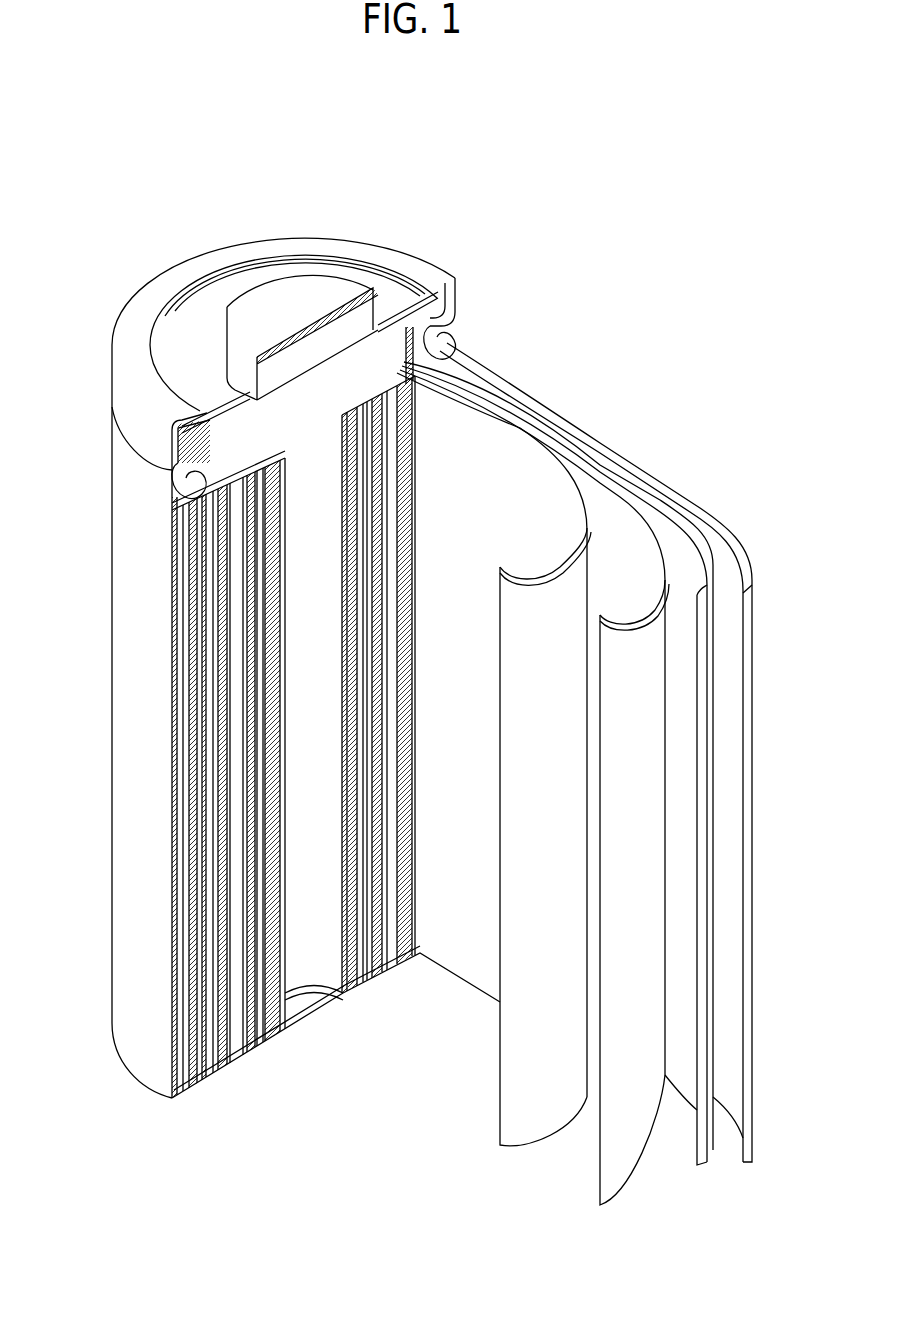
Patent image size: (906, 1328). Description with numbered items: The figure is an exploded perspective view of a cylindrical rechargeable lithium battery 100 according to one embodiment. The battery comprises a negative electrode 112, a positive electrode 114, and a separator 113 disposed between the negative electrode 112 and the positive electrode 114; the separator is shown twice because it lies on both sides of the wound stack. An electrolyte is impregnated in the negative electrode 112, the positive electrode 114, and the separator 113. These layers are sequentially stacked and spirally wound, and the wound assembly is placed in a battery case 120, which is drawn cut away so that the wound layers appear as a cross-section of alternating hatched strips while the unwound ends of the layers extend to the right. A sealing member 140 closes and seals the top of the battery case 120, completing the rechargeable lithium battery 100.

The rechargeable lithium battery 100 is at (496, 200).
The negative electrode 112 is at (717, 538).
The separator 113 is at (505, 447).
The positive electrode 114 is at (588, 482).
The battery case 120 is at (132, 745).
The sealing member 140 is at (253, 300).